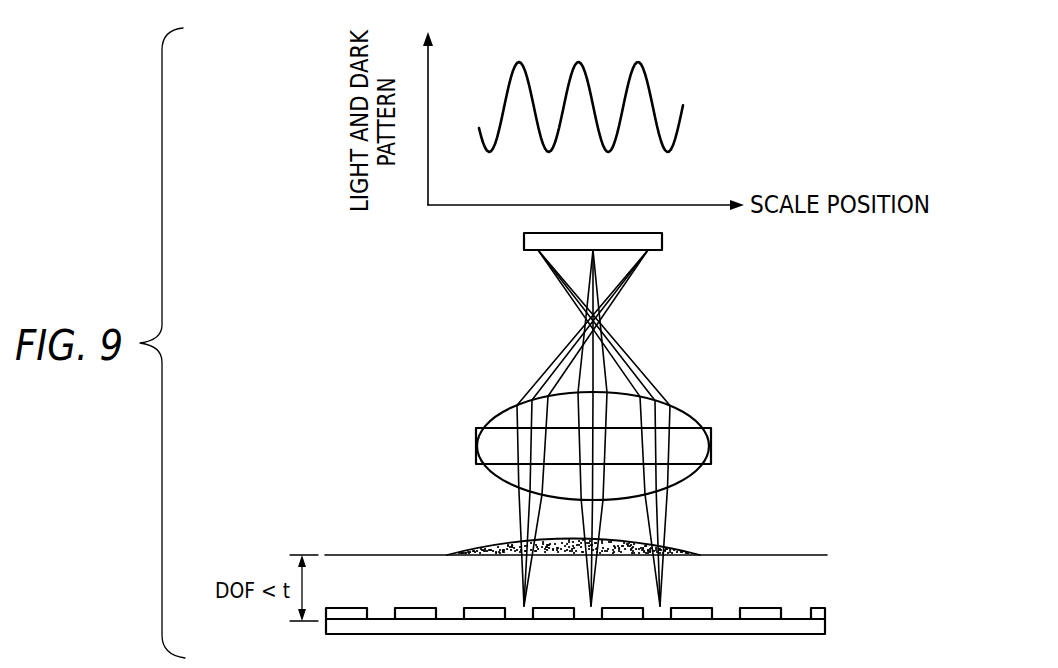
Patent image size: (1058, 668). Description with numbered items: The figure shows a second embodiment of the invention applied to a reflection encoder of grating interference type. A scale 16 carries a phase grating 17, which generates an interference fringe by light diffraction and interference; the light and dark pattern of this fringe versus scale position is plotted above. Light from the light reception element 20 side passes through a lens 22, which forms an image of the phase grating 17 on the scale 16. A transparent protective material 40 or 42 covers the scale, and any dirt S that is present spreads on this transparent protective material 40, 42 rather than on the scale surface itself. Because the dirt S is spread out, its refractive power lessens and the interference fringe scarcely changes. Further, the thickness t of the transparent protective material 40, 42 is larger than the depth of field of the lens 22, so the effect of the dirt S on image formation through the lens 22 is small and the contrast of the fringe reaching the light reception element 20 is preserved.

The light reception element 20 is at (662, 243).
The lens 22 is at (711, 446).
The dirt S is at (680, 545).
The transparent protective material 40 is at (617, 549).
The transparent protective material 42 is at (772, 575).
The phase grating 17 is at (825, 610).
The scale 16 is at (825, 628).